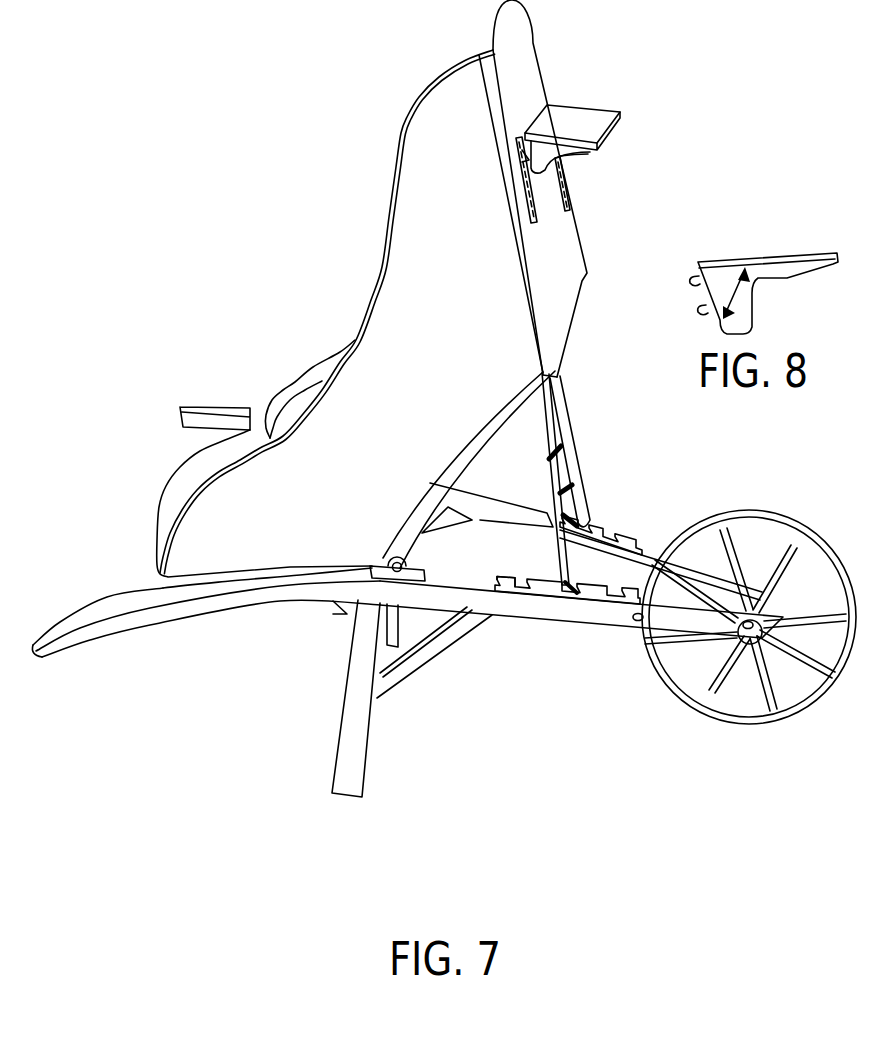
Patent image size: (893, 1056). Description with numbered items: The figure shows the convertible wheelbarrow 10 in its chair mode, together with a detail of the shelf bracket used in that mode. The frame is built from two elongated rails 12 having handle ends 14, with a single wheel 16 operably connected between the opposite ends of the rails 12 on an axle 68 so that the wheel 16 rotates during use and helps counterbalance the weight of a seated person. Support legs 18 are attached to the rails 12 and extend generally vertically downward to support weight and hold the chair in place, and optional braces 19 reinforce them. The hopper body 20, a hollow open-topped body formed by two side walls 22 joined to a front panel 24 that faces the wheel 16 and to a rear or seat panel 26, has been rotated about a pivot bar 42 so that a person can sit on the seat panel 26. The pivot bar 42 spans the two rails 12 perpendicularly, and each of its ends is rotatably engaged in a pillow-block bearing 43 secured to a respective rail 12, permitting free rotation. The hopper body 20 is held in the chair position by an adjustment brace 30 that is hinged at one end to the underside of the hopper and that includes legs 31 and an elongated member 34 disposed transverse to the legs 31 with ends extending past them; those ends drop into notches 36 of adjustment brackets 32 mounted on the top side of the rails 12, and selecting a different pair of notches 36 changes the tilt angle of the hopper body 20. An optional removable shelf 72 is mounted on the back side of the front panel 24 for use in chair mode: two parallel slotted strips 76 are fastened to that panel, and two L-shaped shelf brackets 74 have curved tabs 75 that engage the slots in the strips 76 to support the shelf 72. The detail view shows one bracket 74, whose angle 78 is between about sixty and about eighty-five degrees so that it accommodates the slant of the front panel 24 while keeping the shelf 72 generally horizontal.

In FIG. 7, the convertible wheelbarrow 10 is at (745, 128).
In FIG. 7, the elongated rails 12 is at (633, 547).
In FIG. 7, the handle ends 14 is at (63, 640).
In FIG. 7, the wheel 16 is at (755, 713).
In FIG. 7, the support legs 18 is at (360, 646).
In FIG. 7, the braces 19 is at (433, 652).
In FIG. 7, the hopper body 20 is at (318, 262).
In FIG. 7, the side walls 22 is at (427, 122).
In FIG. 7, the front panel 24 is at (527, 40).
In FIG. 7, the seat panel 26 is at (175, 497).
In FIG. 7, the adjustment brace 30 is at (560, 413).
In FIG. 7, the legs 31 is at (537, 453).
In FIG. 7, the adjustment brackets 32 is at (507, 577).
In FIG. 7, the elongated member 34 is at (562, 582).
In FIG. 7, the notches 36 is at (530, 575).
In FIG. 7, the pivot bar 42 is at (414, 553).
In FIG. 7, the pillow-block bearing 43 is at (315, 588).
In FIG. 7, the axle 68 is at (768, 547).
In FIG. 7, the removable shelf 72 is at (583, 117).
In FIG. 7, the L-shaped shelf brackets 74 is at (572, 153).
In FIG. 8, the L-shaped shelf brackets 74 is at (790, 278).
In FIG. 8, the curved tabs 75 is at (690, 280).
In FIG. 7, the slotted strips 76 is at (533, 202).
In FIG. 8, the angle 78 is at (740, 293).